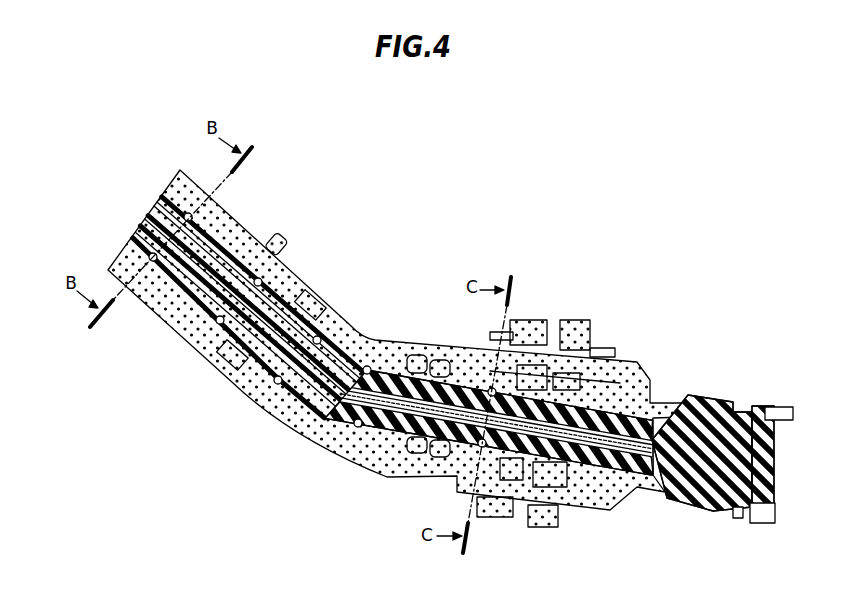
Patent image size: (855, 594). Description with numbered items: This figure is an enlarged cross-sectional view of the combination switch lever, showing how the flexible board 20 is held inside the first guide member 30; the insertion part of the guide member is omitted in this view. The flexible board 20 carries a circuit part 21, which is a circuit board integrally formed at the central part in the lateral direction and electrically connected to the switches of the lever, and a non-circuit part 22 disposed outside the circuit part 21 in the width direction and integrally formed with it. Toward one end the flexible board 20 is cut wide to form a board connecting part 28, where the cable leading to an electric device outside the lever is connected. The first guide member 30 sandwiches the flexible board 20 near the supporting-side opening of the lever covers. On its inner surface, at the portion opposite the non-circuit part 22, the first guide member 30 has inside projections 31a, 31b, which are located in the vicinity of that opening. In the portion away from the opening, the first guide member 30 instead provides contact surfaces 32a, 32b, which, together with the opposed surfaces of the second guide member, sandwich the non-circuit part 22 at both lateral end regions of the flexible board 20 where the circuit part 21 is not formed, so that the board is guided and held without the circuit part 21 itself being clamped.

The flexible board 20 is at (412, 340).
The circuit part 21 is at (638, 410).
The non-circuit part 22 is at (645, 400).
The board connecting part 28 is at (723, 398).
The first guide member 30 is at (600, 372).
The inside projection 31a is at (496, 390).
The inside projection 31b is at (485, 447).
The contact surface 32a is at (365, 367).
The contact surface 32b is at (154, 262).